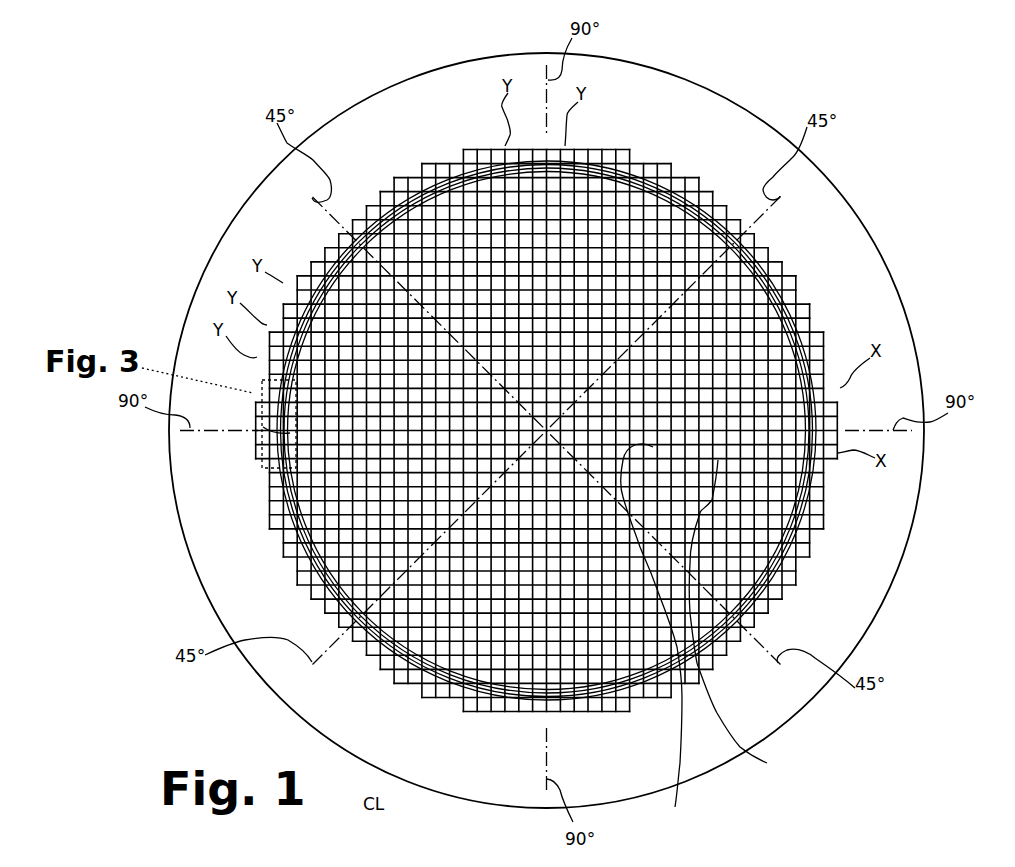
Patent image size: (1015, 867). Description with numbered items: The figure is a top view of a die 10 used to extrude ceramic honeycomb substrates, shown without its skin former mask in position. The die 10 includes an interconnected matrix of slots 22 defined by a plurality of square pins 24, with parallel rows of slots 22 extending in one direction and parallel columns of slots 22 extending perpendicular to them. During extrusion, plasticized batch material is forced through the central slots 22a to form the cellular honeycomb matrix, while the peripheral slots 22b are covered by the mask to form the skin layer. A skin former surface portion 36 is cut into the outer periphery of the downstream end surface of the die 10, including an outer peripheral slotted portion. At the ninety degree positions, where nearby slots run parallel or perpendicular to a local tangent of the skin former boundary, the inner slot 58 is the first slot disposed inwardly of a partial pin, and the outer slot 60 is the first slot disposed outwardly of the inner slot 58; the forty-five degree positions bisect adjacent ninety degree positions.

The die 10 is at (1006, 281).
The slots 22 is at (368, 240).
The central slots 22a is at (712, 637).
The peripheral slots 22b is at (692, 180).
The pins 24 is at (570, 247).
The skin former surface portion 36 is at (308, 248).
The inner slot 58 is at (290, 410).
The outer slot 60 is at (263, 427).